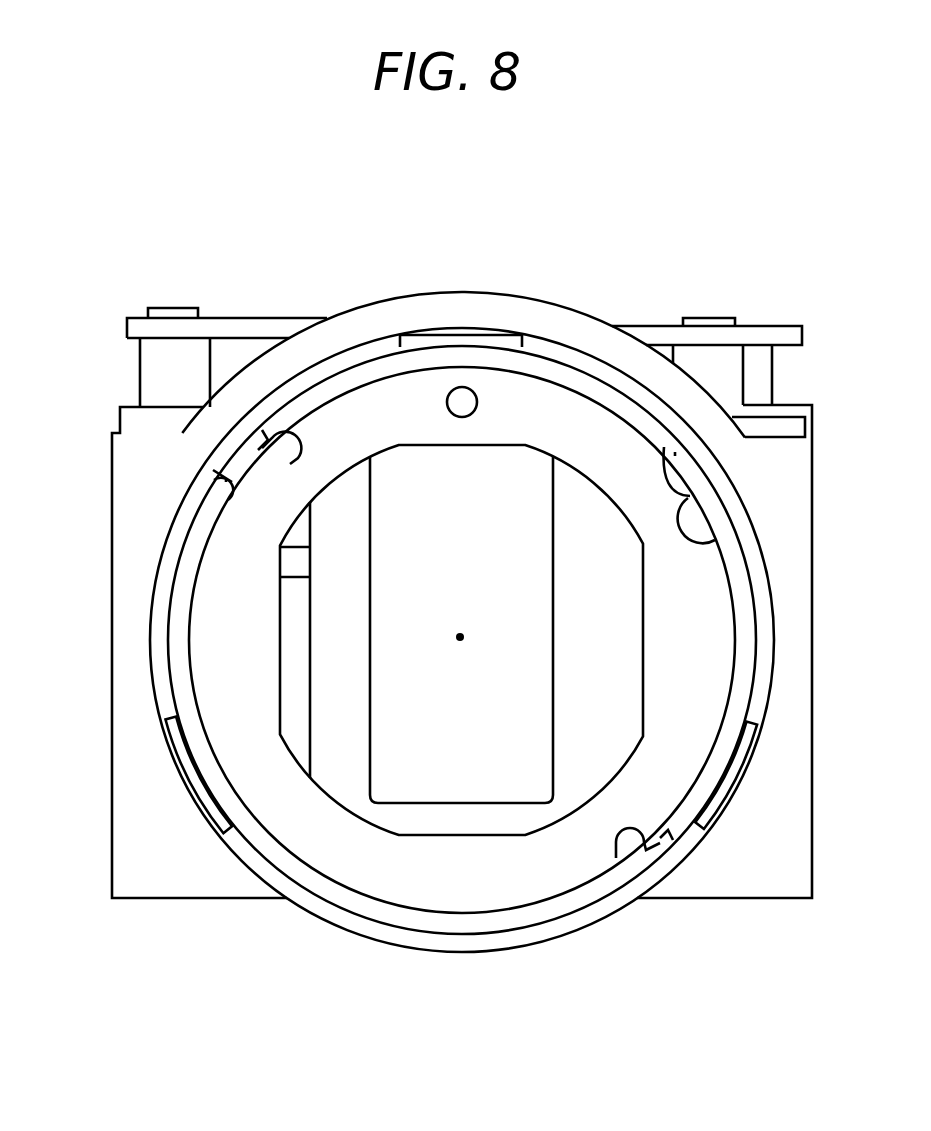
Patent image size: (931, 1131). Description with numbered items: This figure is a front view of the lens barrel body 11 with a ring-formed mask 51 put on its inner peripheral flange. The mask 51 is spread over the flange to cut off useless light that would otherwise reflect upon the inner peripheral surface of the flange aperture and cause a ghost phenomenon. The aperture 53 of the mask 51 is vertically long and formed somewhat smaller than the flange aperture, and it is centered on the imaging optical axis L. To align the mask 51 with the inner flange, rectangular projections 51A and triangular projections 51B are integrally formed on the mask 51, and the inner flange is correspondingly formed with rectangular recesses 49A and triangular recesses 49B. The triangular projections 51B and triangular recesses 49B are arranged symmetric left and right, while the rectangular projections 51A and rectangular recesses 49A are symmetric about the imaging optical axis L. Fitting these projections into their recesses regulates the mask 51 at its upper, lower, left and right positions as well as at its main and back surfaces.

The lens barrel body 11 is at (613, 316).
The mask 51 is at (534, 402).
The rectangular projection 51A is at (268, 436).
The triangular projection 51B is at (226, 478).
The rectangular recess 49A is at (300, 438).
The triangular recess 49B is at (218, 493).
The aperture 53 is at (458, 449).
The imaging optical axis L is at (462, 635).